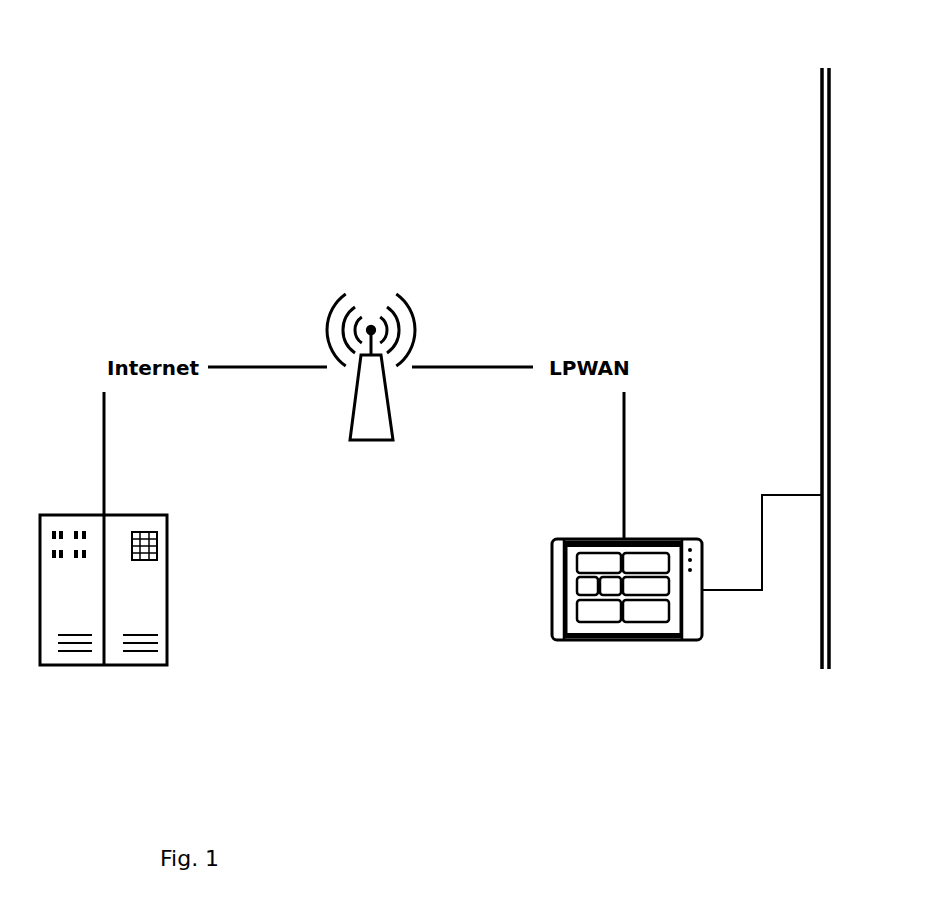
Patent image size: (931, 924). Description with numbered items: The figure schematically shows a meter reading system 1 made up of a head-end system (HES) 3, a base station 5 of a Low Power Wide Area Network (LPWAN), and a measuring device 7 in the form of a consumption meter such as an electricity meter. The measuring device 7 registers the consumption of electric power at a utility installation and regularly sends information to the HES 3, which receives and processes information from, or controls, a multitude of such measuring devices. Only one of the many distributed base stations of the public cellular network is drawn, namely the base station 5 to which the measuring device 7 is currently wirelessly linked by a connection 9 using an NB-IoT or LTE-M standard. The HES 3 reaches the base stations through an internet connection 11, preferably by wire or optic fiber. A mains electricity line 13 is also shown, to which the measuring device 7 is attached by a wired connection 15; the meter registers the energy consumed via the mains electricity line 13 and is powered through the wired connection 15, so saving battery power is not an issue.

The meter reading system 1 is at (152, 138).
The head-end system (HES) 3 is at (167, 604).
The base station 5 is at (355, 395).
The measuring device 7 is at (552, 565).
The connection 9 is at (620, 478).
The internet connection 11 is at (102, 473).
The mains electricity line 13 is at (822, 418).
The wired connection 15 is at (757, 523).